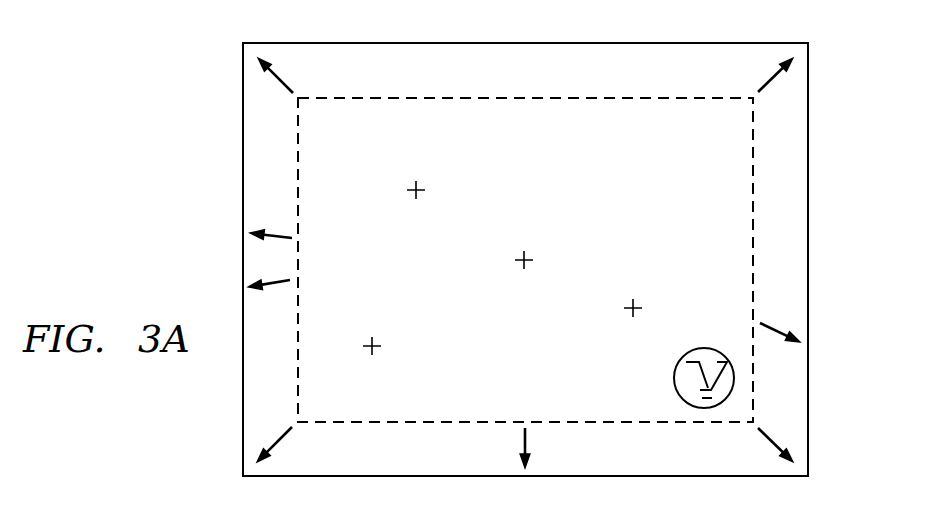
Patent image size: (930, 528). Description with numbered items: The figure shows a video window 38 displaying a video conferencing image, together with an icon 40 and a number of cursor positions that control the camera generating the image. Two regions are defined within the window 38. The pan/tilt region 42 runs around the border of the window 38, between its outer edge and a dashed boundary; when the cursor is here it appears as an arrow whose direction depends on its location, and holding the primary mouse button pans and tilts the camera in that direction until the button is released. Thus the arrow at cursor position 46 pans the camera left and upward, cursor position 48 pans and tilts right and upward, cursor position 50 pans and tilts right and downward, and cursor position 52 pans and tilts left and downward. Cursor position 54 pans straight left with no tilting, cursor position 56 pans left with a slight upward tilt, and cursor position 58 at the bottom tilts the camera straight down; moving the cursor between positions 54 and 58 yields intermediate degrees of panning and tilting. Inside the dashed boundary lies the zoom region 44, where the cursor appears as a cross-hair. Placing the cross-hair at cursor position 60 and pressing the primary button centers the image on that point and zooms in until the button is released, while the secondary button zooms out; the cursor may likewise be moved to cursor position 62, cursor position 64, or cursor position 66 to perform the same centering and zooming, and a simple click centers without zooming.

The video window 38 is at (808, 180).
The icon 40 is at (674, 378).
The pan/tilt region 42 is at (461, 50).
The zoom region 44 is at (514, 118).
The cursor position 46 is at (275, 77).
The cursor position 48 is at (778, 80).
The cursor position 50 is at (780, 443).
The cursor position 52 is at (275, 440).
The cursor position 54 is at (275, 278).
The cursor position 56 is at (276, 236).
The cursor position 58 is at (532, 448).
The cursor position 60 is at (529, 256).
The cursor position 62 is at (422, 184).
The cursor position 64 is at (378, 342).
The cursor position 66 is at (639, 304).